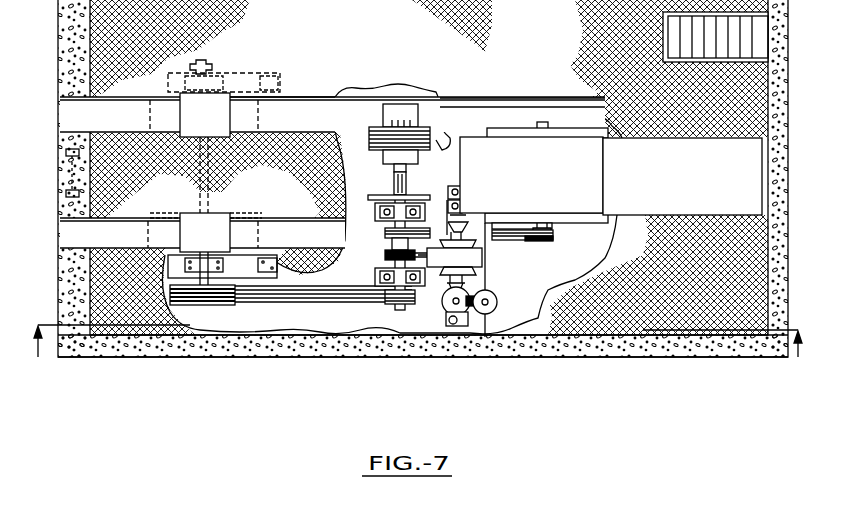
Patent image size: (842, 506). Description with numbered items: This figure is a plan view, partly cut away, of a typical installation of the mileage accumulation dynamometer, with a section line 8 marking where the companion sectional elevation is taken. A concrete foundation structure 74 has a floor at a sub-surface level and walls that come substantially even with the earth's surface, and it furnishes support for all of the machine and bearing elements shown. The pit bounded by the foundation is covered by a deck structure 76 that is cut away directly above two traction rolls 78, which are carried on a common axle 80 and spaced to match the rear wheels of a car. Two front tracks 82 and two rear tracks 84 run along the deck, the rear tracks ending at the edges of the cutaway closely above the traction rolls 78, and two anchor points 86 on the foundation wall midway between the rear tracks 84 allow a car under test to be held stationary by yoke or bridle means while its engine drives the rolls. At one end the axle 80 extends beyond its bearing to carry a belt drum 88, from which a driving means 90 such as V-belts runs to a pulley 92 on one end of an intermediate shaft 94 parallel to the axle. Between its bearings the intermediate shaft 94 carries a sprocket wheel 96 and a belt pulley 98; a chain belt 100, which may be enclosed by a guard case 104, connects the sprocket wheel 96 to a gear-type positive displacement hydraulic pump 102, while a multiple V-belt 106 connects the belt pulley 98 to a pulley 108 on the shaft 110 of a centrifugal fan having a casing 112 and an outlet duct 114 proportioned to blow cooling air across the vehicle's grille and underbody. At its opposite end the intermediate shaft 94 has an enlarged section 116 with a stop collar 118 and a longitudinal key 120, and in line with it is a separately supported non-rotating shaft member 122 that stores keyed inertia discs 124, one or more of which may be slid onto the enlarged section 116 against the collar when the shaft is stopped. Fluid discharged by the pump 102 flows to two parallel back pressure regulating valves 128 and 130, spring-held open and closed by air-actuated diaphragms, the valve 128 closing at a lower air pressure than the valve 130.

The section line 8 is at (418, 358).
The concrete foundation structure 74 is at (423, 363).
The deck structure 76 is at (634, 332).
The traction rolls 78 is at (217, 103).
The common axle 80 is at (212, 192).
The front tracks 82 is at (296, 106).
The rear tracks 84 is at (75, 108).
The anchor points 86 is at (66, 153).
The belt drum 88 is at (218, 300).
The driving means 90 is at (287, 300).
The pulley 92 is at (400, 304).
The intermediate shaft 94 is at (392, 246).
The sprocket wheel 96 is at (390, 258).
The belt pulley 98 is at (385, 233).
The chain belt 100 is at (424, 268).
The positive displacement hydraulic pump 102 is at (463, 318).
The guard case 104 is at (483, 258).
The multiple V-belt 106 is at (496, 230).
The pulley 108 is at (542, 240).
The fan shaft 110 is at (548, 229).
The fan casing 112 is at (534, 172).
The outlet duct 114 is at (682, 176).
The enlarged shaft section 116 is at (408, 178).
The stop collar 118 is at (396, 203).
The longitudinal key 120 is at (407, 182).
The non-rotating shaft member 122 is at (383, 158).
The inertia discs 124 is at (384, 129).
The back pressure regulating valve 128 is at (489, 304).
The back pressure regulating valve 130 is at (470, 310).